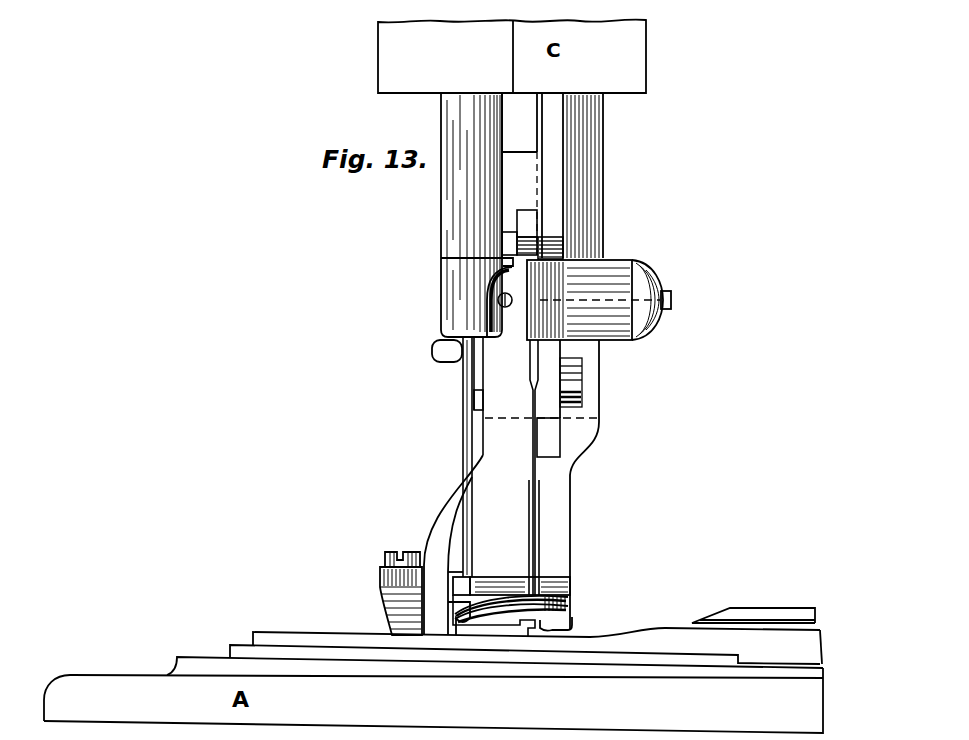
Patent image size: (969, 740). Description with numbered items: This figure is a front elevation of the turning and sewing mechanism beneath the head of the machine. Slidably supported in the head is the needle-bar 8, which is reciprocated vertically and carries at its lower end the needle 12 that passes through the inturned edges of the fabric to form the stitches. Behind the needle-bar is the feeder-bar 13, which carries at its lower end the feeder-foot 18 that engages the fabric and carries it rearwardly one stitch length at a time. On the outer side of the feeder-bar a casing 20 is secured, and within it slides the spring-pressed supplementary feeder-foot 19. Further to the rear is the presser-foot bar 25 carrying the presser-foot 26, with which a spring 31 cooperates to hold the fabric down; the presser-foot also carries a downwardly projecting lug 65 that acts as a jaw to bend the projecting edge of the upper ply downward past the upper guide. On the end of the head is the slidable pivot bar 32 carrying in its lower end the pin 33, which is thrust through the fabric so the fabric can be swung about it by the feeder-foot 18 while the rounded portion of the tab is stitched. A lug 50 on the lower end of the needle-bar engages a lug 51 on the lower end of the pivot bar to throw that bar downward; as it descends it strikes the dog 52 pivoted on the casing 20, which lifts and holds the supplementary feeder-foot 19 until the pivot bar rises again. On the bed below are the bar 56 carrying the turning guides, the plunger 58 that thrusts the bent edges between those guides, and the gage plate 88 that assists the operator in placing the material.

The needle-bar 8 is at (528, 175).
The needle 12 is at (532, 440).
The feeder-bar 13 is at (549, 437).
The feeder-foot 18 is at (530, 513).
The supplementary feeder-foot 19 is at (432, 506).
The casing 20 is at (480, 382).
The presser-foot bar 25 is at (603, 157).
The presser-foot 26 is at (570, 607).
The spring 31 is at (385, 602).
The bar 32 is at (452, 216).
The pin 33 is at (466, 436).
The lug 50 is at (506, 232).
The lug 51 is at (505, 265).
The dog 52 is at (433, 350).
The bar 56 is at (526, 647).
The plunger 58 is at (753, 601).
The lug 65 is at (572, 627).
The gage plate 88 is at (296, 637).